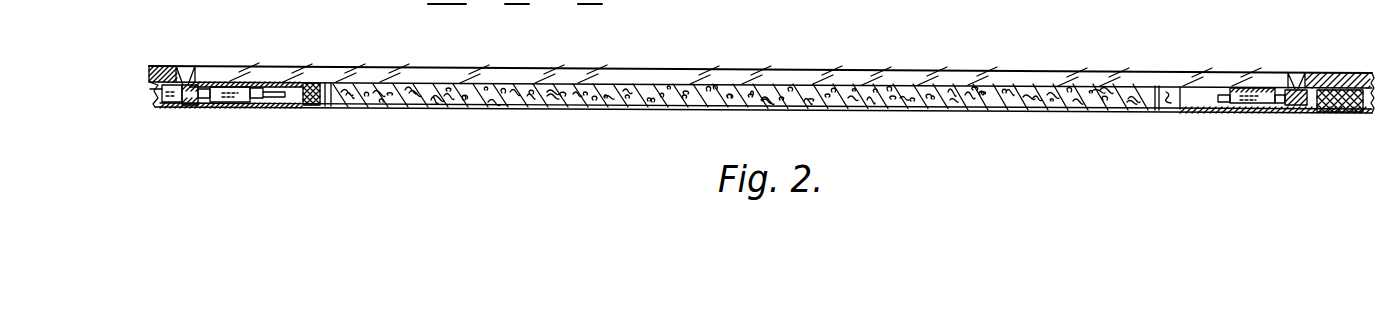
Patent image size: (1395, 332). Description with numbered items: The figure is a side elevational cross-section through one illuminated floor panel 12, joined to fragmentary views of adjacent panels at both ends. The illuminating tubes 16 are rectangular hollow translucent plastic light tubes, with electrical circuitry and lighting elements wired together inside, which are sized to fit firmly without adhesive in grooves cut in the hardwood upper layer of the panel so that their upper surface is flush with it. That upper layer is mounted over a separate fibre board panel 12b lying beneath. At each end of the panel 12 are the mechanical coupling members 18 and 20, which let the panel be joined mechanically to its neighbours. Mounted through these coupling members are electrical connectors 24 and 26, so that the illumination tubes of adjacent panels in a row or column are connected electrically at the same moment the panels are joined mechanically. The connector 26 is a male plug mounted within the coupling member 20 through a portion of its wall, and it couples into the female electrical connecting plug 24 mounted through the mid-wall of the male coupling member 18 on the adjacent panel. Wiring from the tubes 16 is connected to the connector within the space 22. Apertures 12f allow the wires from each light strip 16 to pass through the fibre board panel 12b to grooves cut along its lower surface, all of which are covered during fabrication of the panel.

The panel 12 is at (793, 60).
The fibre board panel 12b is at (438, 108).
The apertures 12f is at (328, 109).
The illuminating tubes 16 is at (603, 82).
The mechanical coupling member 18 is at (243, 108).
The mechanical coupling member 20 is at (165, 106).
The space 22 is at (287, 106).
The female electrical connecting plug 24 is at (228, 98).
The male plug 26 is at (152, 89).